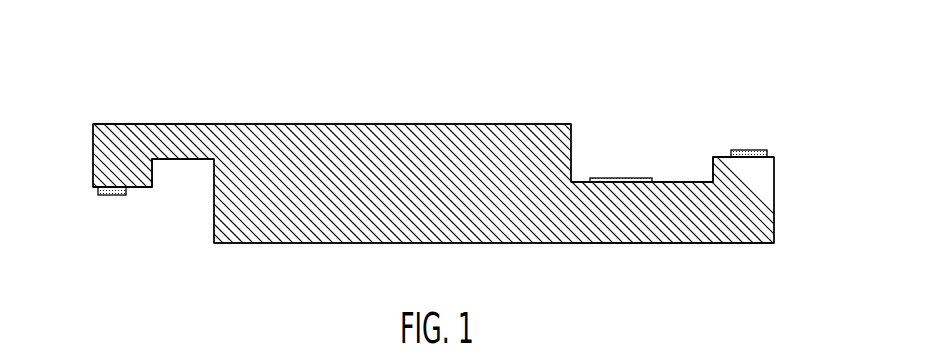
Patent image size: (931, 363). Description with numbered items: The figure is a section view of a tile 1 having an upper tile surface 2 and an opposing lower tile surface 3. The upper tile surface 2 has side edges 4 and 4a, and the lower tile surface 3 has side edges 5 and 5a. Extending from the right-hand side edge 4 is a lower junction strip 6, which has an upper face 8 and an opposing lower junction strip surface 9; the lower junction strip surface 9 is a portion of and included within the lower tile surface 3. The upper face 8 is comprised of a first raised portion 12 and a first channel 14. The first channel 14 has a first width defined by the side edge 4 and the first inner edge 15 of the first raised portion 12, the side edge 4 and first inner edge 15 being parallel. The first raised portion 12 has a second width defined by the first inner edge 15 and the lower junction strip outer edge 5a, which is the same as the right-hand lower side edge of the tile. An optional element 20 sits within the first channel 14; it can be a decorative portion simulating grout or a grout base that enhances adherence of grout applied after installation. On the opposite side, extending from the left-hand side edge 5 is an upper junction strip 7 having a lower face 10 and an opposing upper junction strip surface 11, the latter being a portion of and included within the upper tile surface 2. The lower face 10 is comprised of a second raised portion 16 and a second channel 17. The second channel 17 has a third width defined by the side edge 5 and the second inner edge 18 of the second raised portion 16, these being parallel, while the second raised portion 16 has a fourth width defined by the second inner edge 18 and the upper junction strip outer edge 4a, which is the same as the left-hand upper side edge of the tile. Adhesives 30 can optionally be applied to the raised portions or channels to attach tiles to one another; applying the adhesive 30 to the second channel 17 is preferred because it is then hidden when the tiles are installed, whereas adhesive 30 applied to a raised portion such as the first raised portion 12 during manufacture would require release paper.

The tile 1 is at (396, 190).
The upper tile surface 2 is at (403, 124).
The lower tile surface 3 is at (467, 244).
The side edge 4 is at (578, 128).
The upper junction strip outer edge 4a is at (92, 153).
The side edge 5 is at (213, 240).
The lower junction strip outer edge 5a is at (776, 201).
The lower junction strip 6 is at (772, 258).
The upper junction strip 7 is at (97, 77).
The upper face 8 is at (770, 135).
The lower junction strip surface 9 is at (640, 244).
The lower face 10 is at (93, 223).
The upper junction strip surface 11 is at (175, 124).
The first raised portion 12 is at (728, 155).
The first channel 14 is at (707, 150).
The first inner edge 15 is at (710, 173).
The second raised portion 16 is at (139, 189).
The second channel 17 is at (190, 160).
The second inner edge 18 is at (153, 161).
The optional element 20 is at (605, 177).
The adhesive 30 is at (112, 198).